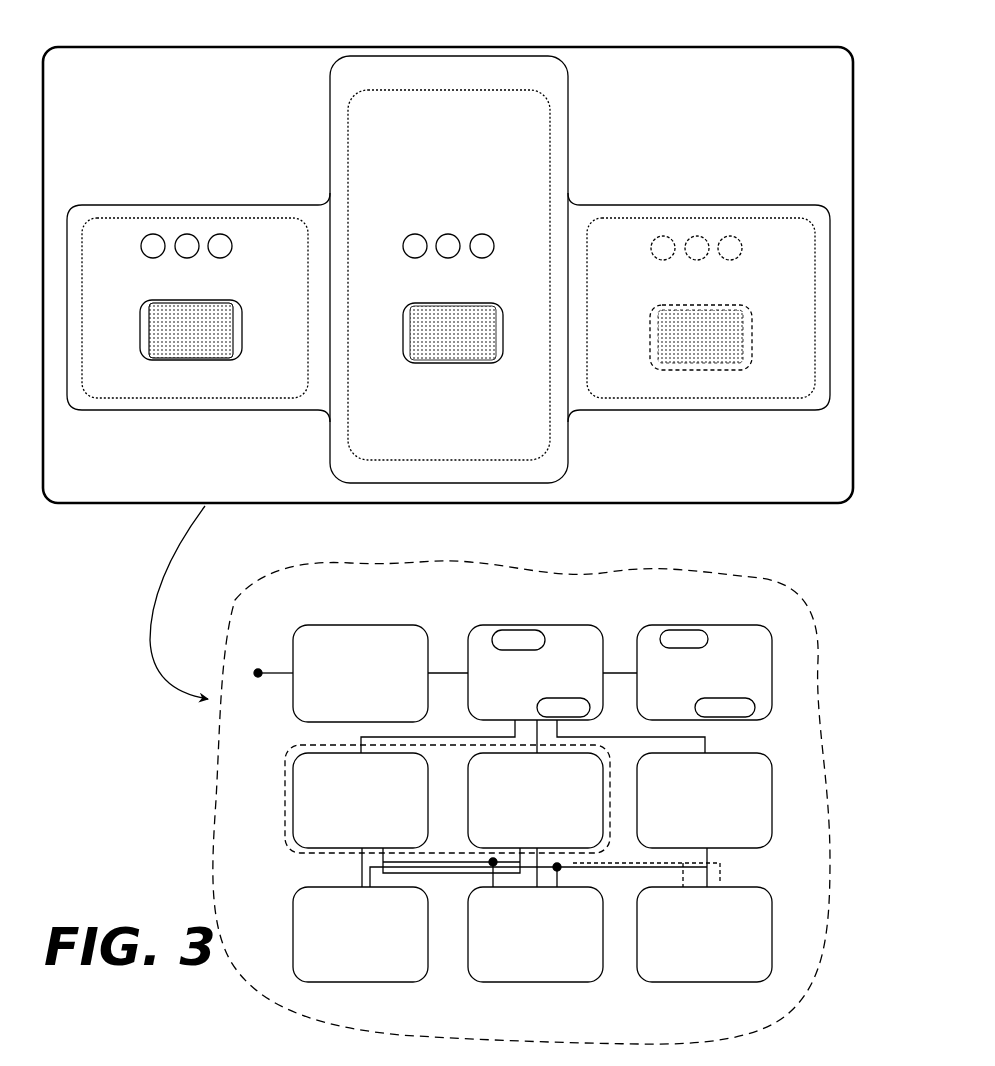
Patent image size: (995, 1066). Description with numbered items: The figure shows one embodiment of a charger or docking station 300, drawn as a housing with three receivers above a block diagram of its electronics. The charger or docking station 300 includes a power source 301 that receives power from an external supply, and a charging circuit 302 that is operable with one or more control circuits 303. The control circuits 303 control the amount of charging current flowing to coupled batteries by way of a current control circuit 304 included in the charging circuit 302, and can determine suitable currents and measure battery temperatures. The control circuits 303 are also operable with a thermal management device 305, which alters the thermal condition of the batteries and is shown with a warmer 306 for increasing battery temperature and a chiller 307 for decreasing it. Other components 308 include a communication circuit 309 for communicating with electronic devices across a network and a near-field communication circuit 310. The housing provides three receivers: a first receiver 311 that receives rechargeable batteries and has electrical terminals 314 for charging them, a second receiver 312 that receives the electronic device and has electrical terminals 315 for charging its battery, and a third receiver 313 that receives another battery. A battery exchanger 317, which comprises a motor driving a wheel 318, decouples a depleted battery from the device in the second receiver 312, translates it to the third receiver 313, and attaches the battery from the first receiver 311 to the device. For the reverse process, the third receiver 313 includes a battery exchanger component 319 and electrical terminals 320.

The charger or docking station 300 is at (662, 34).
The power source 301 is at (365, 637).
The charging circuit 302 is at (557, 638).
The control circuits 303 is at (517, 643).
The current control circuit 304 is at (580, 706).
The thermal management device 305 is at (285, 770).
The warmer 306 is at (310, 802).
The chiller 307 is at (493, 801).
The other components 308 is at (740, 637).
The communication circuit 309 is at (685, 638).
The near-field communication circuit 310 is at (745, 707).
The first receiver 311 is at (207, 208).
The second receiver 312 is at (333, 135).
The third receiver 313 is at (707, 210).
The electrical terminals 314 is at (150, 250).
The electrical terminals 315 is at (415, 248).
The battery exchanger 317 is at (242, 333).
The wheel 318 is at (190, 352).
The battery exchanger component 319 is at (752, 333).
The electrical terminals 320 is at (660, 252).